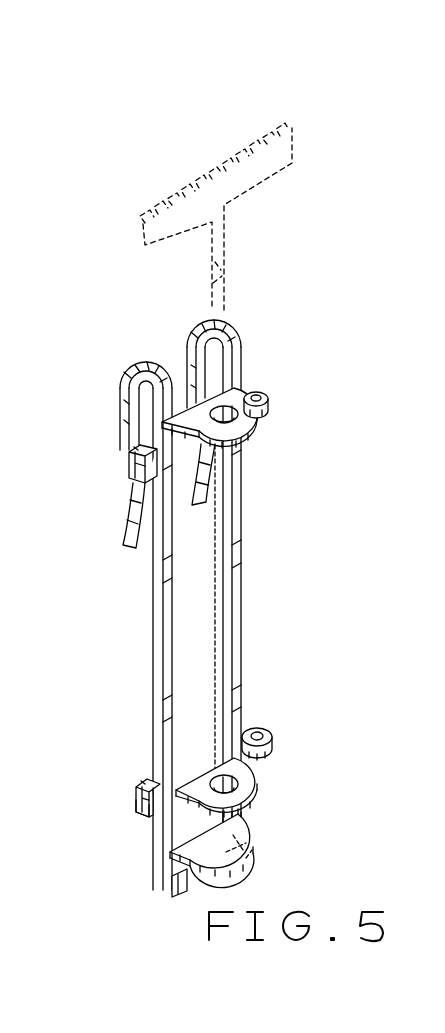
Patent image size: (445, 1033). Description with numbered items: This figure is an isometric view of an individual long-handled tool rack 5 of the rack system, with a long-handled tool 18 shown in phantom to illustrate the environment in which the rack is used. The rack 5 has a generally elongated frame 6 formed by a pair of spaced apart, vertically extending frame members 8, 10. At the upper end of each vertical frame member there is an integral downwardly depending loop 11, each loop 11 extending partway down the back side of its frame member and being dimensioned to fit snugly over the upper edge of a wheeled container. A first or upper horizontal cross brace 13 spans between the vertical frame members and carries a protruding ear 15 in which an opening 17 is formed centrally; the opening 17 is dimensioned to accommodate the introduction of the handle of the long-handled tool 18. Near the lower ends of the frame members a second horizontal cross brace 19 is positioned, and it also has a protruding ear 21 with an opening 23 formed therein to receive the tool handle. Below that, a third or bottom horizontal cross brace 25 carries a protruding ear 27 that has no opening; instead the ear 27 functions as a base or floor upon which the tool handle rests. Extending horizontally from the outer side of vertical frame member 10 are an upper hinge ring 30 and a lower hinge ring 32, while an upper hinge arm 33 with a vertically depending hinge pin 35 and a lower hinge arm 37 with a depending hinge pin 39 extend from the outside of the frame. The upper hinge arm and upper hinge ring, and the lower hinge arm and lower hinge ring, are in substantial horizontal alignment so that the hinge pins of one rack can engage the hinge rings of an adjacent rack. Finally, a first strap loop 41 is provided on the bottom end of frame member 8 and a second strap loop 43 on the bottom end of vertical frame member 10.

The long-handled tool rack 5 is at (251, 390).
The frame 6 is at (197, 618).
The vertical frame member 8 is at (158, 672).
The vertical frame member 10 is at (242, 640).
The loop 11 is at (138, 375).
The upper horizontal cross brace 13 is at (168, 350).
The ear 15 is at (250, 390).
The opening 17 is at (262, 410).
The long-handled tool 18 is at (230, 235).
The second horizontal cross brace 19 is at (211, 767).
The ear 21 is at (250, 781).
The opening 23 is at (243, 770).
The bottom horizontal cross brace 25 is at (185, 835).
The ear 27 is at (214, 851).
The upper hinge ring 30 is at (275, 416).
The lower hinge ring 32 is at (255, 728).
The upper hinge arm 33 is at (126, 450).
The hinge pin 35 is at (134, 482).
The lower hinge arm 37 is at (118, 790).
The hinge pin 39 is at (138, 810).
The first strap loop 41 is at (181, 893).
The second strap loop 43 is at (247, 842).